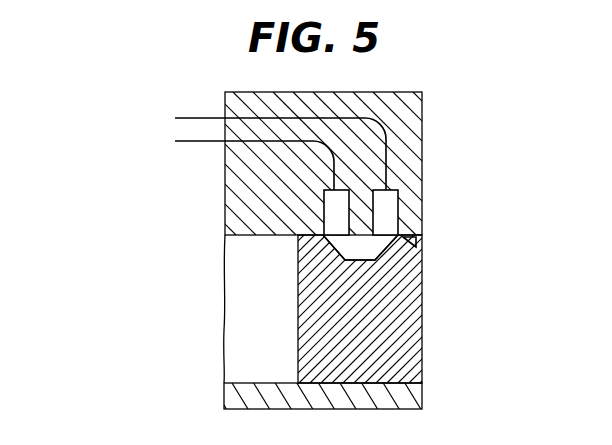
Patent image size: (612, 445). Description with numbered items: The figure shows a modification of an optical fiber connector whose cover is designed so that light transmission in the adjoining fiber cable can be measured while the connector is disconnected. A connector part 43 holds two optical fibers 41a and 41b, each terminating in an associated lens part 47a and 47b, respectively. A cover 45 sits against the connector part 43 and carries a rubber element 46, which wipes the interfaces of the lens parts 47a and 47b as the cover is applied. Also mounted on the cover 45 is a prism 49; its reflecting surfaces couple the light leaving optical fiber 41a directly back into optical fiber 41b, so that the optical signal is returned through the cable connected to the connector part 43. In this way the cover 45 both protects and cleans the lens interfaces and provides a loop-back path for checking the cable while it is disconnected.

The optical fiber 41a is at (262, 149).
The optical fiber 41b is at (236, 160).
The connector part 43 is at (275, 206).
The cover 45 is at (390, 297).
The rubber element 46 is at (417, 243).
The lens part 47a is at (390, 207).
The lens part 47b is at (334, 225).
The prism 49 is at (352, 247).